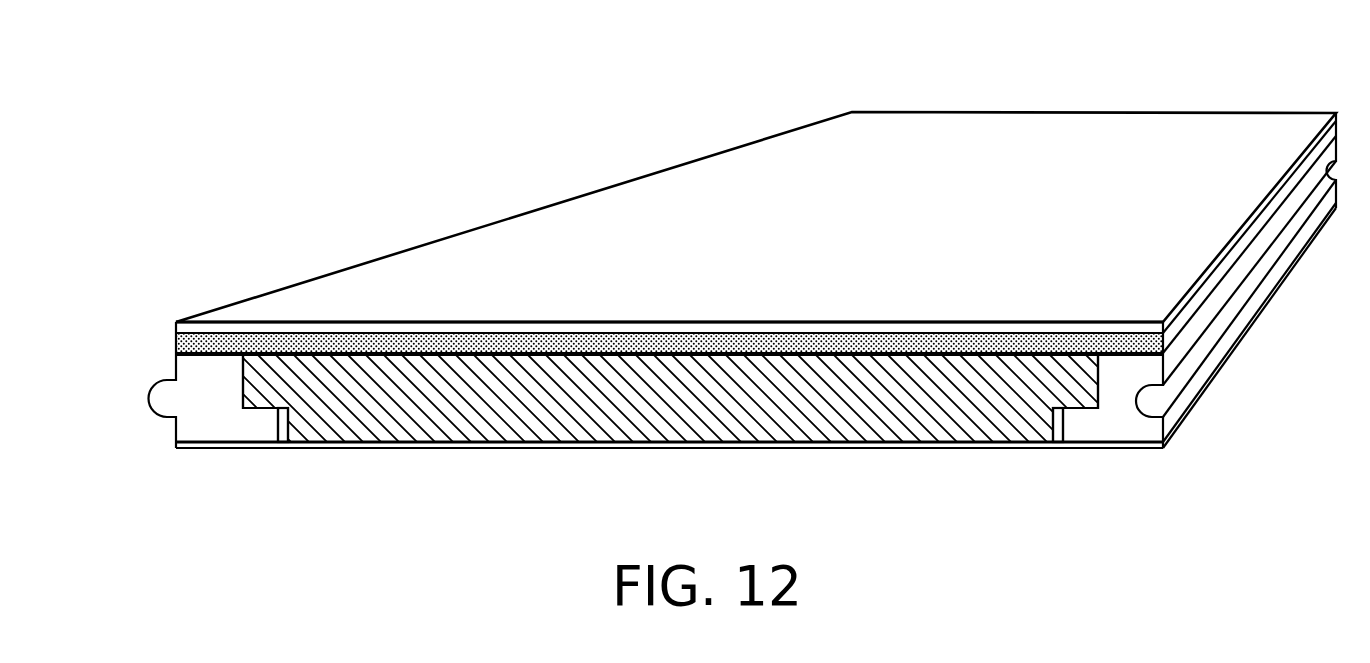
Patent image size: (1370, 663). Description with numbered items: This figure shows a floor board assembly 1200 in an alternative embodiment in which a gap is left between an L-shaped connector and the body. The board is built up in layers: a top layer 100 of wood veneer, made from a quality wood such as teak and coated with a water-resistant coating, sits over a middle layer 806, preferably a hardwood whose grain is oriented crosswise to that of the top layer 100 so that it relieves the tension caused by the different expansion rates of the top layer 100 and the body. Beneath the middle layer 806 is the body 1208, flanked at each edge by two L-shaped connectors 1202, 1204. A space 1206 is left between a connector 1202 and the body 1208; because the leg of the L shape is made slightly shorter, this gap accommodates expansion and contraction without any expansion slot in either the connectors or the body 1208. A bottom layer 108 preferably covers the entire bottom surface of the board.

The flooring panel assembly 1200 is at (498, 133).
The top layer 100 is at (863, 258).
The middle layer 806 is at (175, 342).
The body 1208 is at (668, 405).
The L shape connector 1202 is at (203, 421).
The L shape connector 1204 is at (1127, 422).
The space 1206 is at (286, 430).
The bottom layer 108 is at (547, 452).